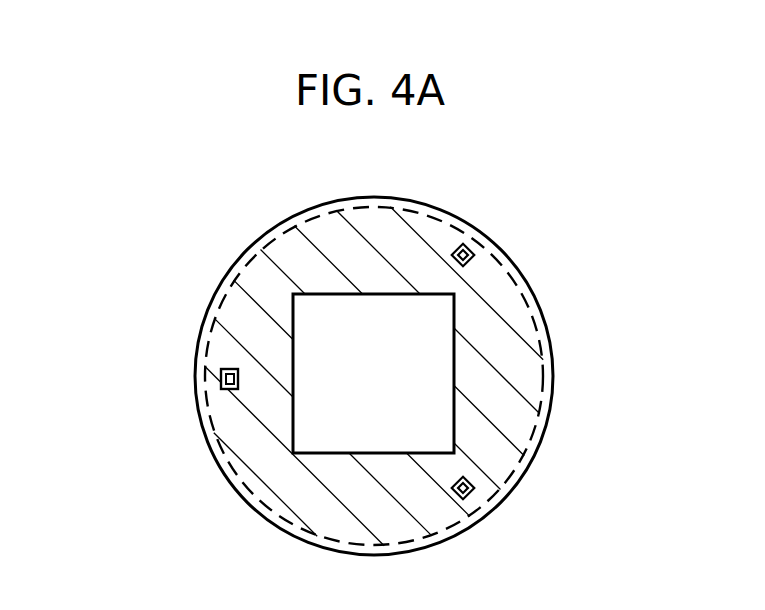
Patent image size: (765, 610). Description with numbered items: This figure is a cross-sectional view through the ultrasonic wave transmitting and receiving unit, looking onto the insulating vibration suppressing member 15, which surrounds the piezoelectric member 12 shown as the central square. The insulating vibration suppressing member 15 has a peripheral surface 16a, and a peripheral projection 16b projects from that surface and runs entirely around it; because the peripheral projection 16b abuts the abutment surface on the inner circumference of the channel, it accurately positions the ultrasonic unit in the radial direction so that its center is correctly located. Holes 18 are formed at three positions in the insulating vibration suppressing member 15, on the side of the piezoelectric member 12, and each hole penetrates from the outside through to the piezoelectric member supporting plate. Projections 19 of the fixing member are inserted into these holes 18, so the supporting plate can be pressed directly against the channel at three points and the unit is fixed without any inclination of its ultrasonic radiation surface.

The insulating vibration suppressing member 15 is at (335, 352).
The piezoelectric member 12 is at (455, 370).
The peripheral surface 16a is at (208, 397).
The peripheral projection 16b is at (212, 450).
The hole 18 is at (200, 399).
The projection 19 is at (229, 390).